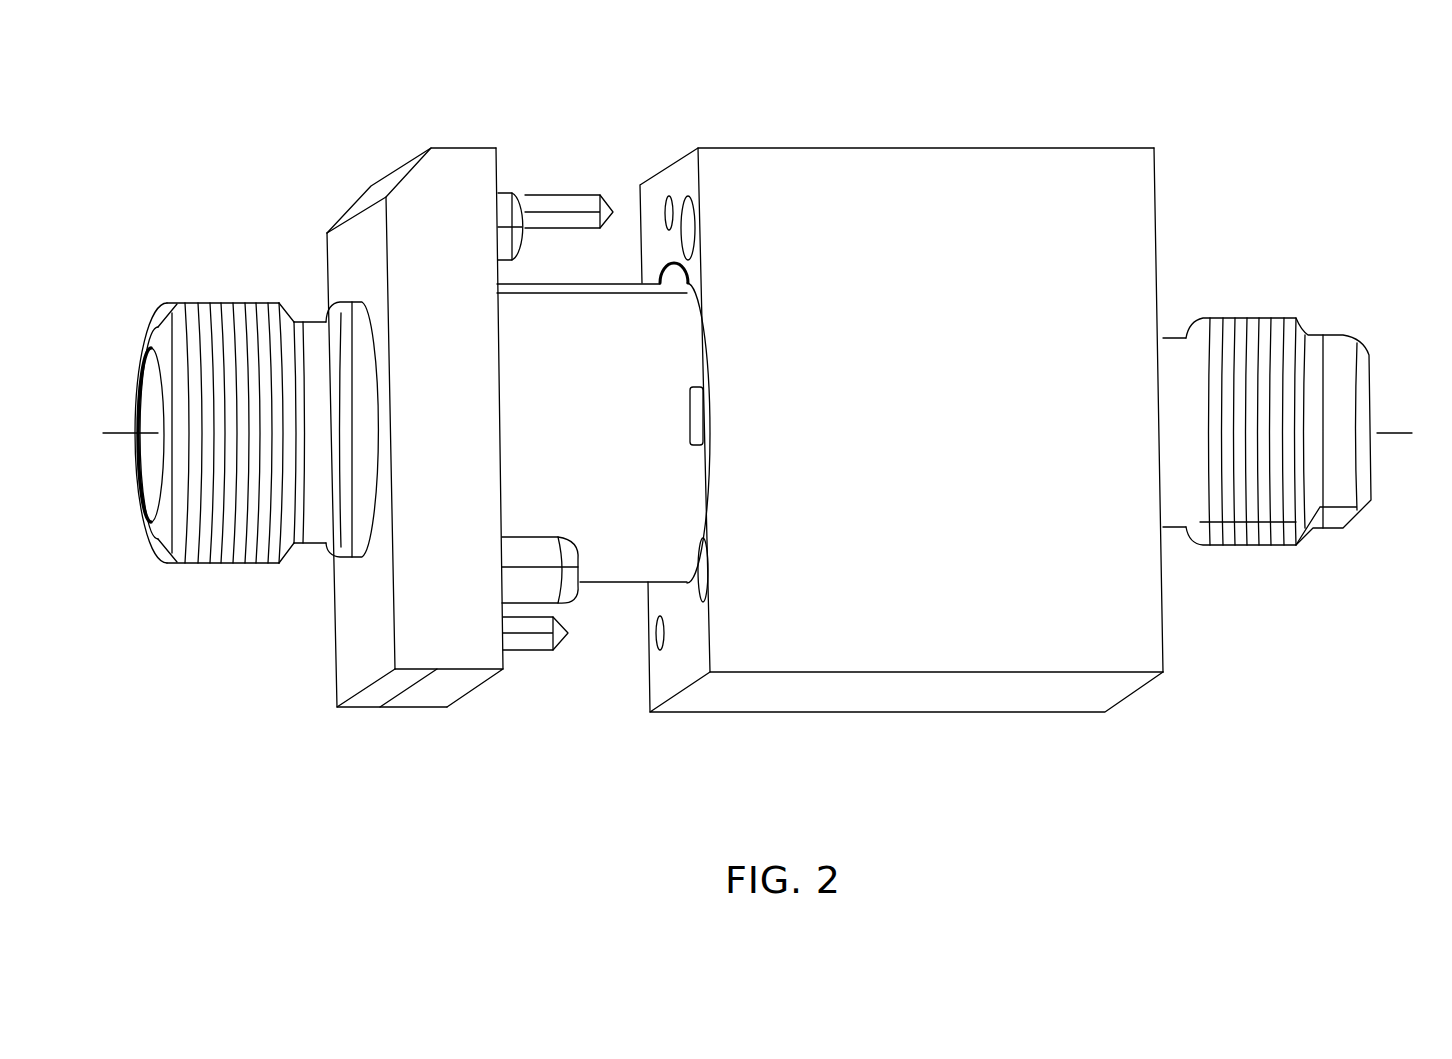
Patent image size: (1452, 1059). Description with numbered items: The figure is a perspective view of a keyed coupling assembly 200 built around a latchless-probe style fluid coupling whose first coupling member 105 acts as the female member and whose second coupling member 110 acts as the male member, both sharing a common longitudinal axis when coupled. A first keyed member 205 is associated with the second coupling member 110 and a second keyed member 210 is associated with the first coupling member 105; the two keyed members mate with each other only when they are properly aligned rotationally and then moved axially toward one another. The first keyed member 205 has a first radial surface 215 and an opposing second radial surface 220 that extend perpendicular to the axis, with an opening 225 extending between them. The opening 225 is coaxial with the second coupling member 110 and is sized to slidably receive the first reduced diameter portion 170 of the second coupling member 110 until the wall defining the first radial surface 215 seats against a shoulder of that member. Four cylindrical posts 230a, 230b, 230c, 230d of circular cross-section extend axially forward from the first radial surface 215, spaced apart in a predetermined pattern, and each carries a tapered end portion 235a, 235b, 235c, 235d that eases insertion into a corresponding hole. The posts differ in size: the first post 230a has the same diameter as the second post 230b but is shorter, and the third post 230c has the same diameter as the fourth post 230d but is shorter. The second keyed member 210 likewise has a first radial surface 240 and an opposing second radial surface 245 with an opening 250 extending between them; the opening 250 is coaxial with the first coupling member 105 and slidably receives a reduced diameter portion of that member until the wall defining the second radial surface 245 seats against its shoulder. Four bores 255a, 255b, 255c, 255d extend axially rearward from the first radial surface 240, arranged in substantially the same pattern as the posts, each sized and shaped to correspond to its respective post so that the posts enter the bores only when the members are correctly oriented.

The first coupling member 105 is at (1246, 305).
The second coupling member 110 is at (237, 578).
The first reduced diameter portion 170 is at (352, 543).
The keyed coupling assembly 200 is at (759, 412).
The first keyed member 205 is at (394, 421).
The second keyed member 210 is at (949, 461).
The first radial surface 215 is at (506, 668).
The second radial surface 220 is at (357, 232).
The opening 225 is at (326, 318).
The first post 230a is at (539, 211).
The second post 230b is at (572, 607).
The third post 230c is at (558, 679).
The fourth post 230d is at (589, 166).
The tapered end portion 235a is at (521, 237).
The tapered end portion 235b is at (572, 597).
The tapered end portion 235c is at (583, 662).
The tapered end portion 235d is at (602, 197).
The first radial surface 240 is at (738, 437).
The second radial surface 245 is at (1170, 625).
The opening 250 is at (672, 275).
The bore 255a is at (692, 228).
The bore 255b is at (703, 575).
The bore 255c is at (657, 647).
The bore 255d is at (670, 203).